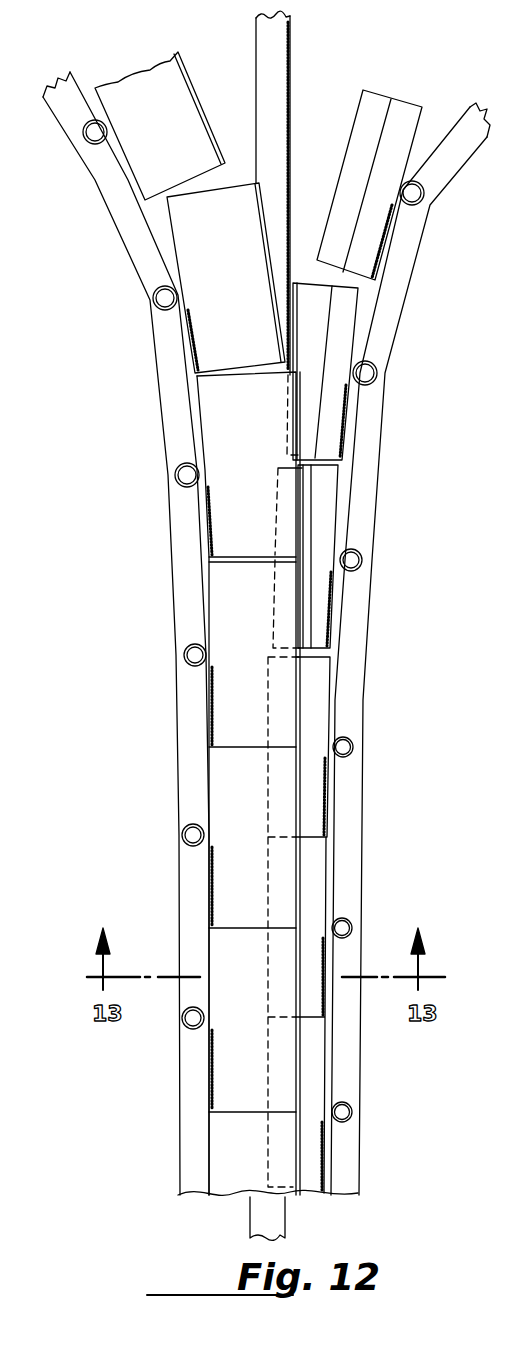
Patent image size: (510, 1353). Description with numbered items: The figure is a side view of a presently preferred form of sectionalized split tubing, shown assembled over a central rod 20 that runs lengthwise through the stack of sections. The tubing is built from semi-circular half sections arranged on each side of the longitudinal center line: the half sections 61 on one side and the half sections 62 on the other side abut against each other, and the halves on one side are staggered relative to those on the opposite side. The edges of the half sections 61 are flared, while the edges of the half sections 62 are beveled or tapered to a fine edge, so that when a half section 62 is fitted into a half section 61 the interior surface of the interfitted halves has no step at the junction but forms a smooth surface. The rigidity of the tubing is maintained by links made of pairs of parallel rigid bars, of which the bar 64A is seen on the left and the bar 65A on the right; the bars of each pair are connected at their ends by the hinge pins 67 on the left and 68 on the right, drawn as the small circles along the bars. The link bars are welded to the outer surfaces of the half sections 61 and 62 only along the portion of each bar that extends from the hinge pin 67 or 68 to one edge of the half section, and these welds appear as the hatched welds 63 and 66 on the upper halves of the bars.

The rod 20 is at (277, 78).
The semi-circular half section 61 is at (153, 92).
The half section 62 is at (402, 110).
The weld 63 is at (210, 708).
The rigid link bar 64A is at (168, 368).
The rigid link bar 65A is at (452, 160).
The weld 66 is at (333, 617).
The hinge pin 67 is at (163, 301).
The hinge pin 68 is at (367, 373).